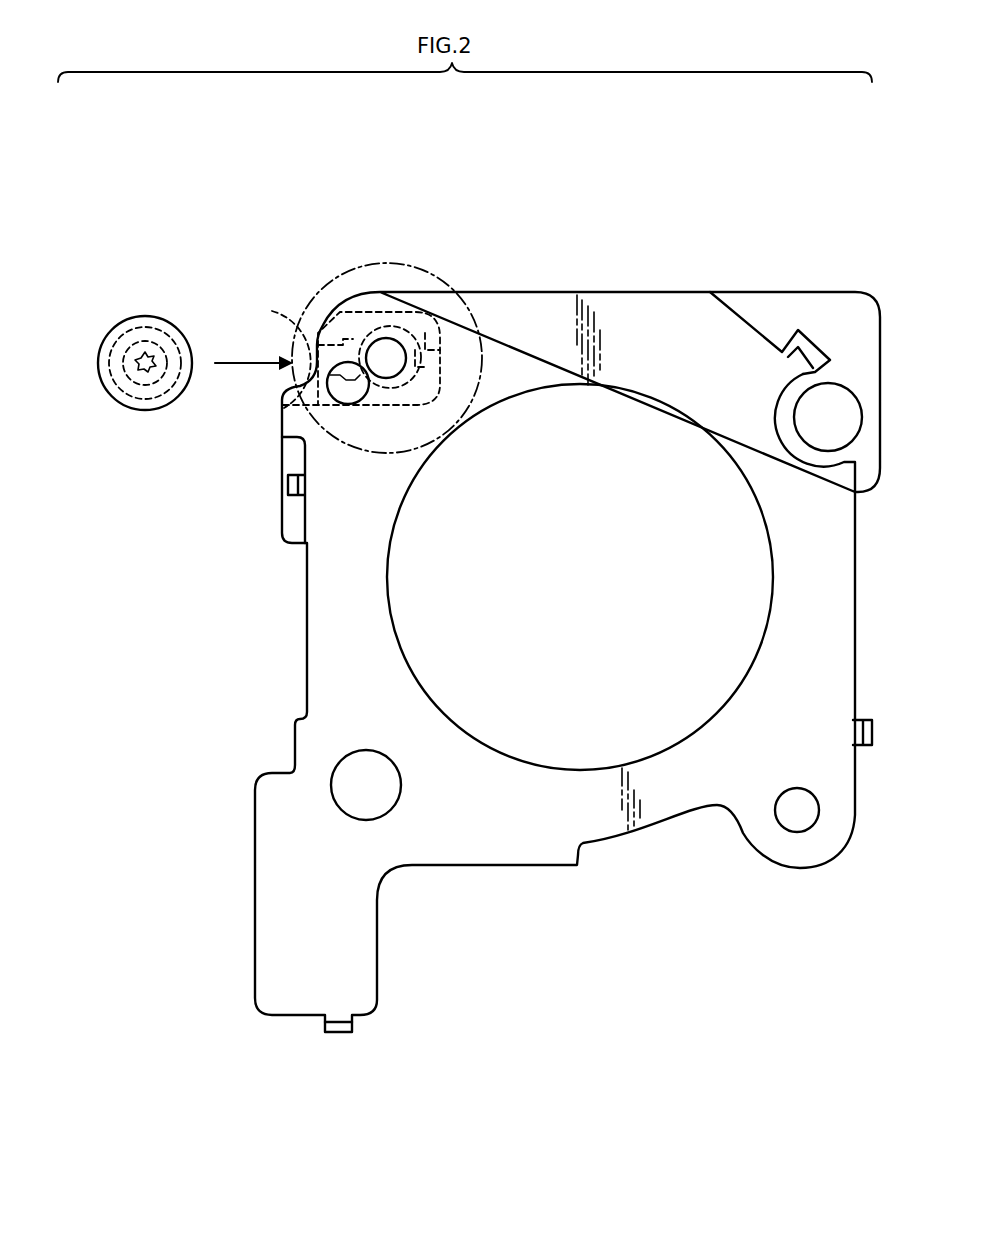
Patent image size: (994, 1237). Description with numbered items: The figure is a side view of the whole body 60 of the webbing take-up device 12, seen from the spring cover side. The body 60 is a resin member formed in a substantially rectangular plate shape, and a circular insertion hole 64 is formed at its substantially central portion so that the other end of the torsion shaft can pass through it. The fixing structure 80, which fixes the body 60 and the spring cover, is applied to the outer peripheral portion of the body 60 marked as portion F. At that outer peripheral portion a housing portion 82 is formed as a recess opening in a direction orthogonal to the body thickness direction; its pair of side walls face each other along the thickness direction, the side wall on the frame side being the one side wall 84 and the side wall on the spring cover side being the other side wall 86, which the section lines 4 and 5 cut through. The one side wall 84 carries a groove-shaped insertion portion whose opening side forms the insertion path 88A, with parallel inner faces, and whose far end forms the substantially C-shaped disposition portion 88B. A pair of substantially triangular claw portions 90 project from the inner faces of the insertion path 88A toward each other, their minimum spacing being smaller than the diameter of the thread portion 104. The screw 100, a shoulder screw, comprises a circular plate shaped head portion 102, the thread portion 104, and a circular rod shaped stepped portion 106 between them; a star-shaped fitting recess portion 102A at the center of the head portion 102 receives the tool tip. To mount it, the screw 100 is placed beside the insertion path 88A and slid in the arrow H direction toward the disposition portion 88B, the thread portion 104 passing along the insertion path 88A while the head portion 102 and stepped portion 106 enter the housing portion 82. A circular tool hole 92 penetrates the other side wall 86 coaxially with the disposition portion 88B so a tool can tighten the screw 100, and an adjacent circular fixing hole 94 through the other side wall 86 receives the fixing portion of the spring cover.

The webbing take-up device 12 is at (567, 574).
The body 60 is at (620, 286).
The insertion hole 64 is at (612, 393).
The fixing structure 80 is at (383, 352).
The housing portion 82 is at (438, 335).
The one side wall 84 is at (455, 423).
The other side wall 86 is at (389, 320).
The insertion path 88A is at (292, 407).
The disposition portion 88B is at (422, 367).
The claw portions 90 is at (292, 316).
The tool hole 92 is at (387, 375).
The fixing hole 94 is at (345, 398).
The screw 100 is at (145, 359).
The head portion 102 is at (143, 411).
The fitting recess portion 102A is at (139, 361).
The thread portion 104 is at (126, 381).
The stepped portion 106 is at (169, 334).
The arrow H direction H is at (240, 371).
The portion F is at (442, 277).
The section line 4 is at (389, 245).
The section line 5 is at (347, 200).